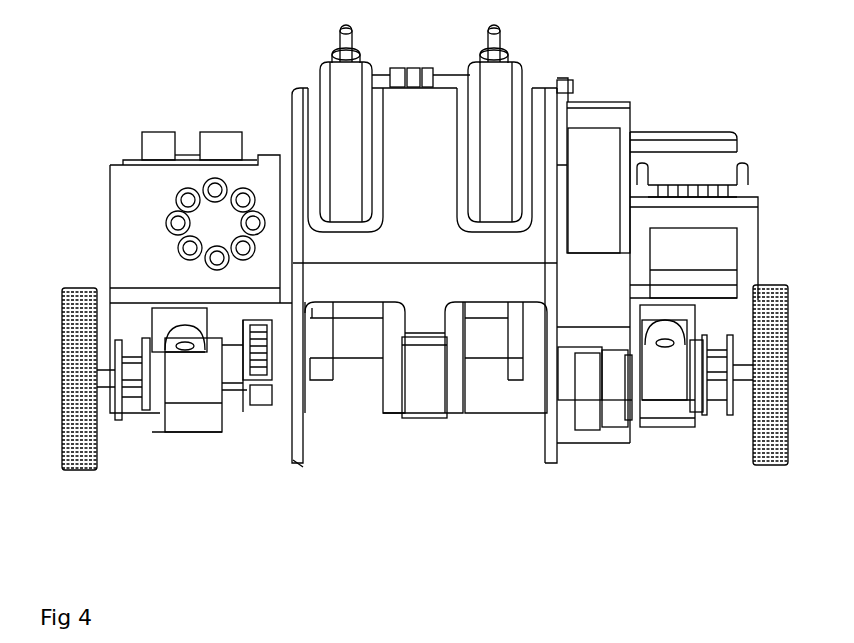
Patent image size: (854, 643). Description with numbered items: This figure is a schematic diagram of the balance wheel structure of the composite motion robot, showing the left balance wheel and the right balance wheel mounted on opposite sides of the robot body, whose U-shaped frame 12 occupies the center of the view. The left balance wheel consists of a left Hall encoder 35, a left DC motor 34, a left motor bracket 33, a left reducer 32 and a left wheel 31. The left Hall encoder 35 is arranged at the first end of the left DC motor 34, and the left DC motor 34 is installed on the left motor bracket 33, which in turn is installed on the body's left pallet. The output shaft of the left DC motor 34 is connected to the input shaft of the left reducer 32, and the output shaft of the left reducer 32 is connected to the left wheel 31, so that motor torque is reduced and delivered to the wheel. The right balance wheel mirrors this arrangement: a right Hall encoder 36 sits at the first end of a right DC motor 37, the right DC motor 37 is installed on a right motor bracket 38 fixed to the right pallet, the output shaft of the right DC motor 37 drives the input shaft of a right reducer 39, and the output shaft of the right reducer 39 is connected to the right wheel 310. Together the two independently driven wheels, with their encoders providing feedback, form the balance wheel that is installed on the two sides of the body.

The U-shaped frame 12 is at (426, 382).
The left wheel 31 is at (772, 435).
The left reducer 32 is at (710, 385).
The left motor bracket 33 is at (658, 413).
The left DC motor 34 is at (615, 367).
The left Hall encoder 35 is at (588, 382).
The right Hall encoder 36 is at (258, 392).
The right DC motor 37 is at (235, 373).
The right motor bracket 38 is at (190, 368).
The right reducer 39 is at (137, 368).
The right wheel 310 is at (83, 450).